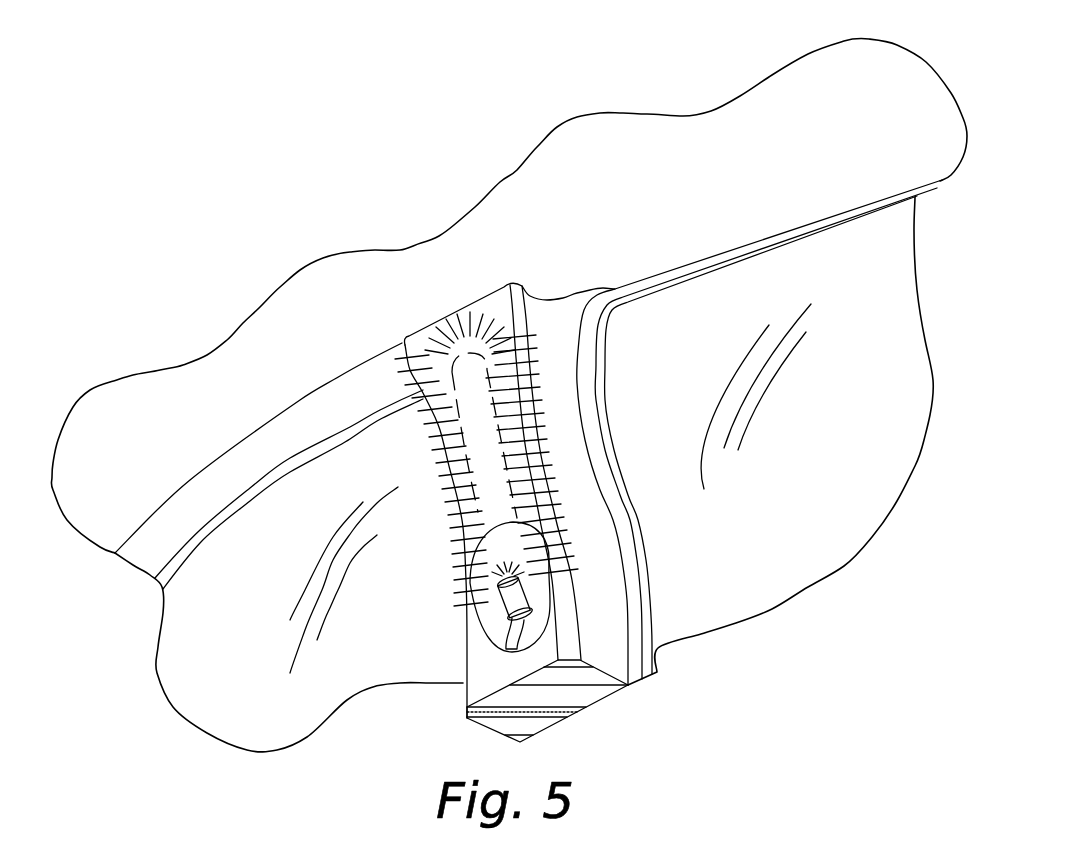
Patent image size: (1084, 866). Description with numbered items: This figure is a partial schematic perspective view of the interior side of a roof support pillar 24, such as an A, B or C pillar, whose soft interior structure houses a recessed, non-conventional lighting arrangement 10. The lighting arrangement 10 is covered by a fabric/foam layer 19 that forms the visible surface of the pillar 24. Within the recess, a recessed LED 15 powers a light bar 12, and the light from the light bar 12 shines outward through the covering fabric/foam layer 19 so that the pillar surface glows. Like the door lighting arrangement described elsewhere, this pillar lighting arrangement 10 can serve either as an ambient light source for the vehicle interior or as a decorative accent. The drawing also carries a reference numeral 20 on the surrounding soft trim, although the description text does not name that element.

The lighting arrangement 10 is at (446, 279).
The light bar 12 is at (473, 397).
The LED 15 is at (500, 610).
The fabric/foam layer 19 is at (480, 653).
The protective pad 20 is at (694, 150).
The roof support pillar 24 is at (604, 599).